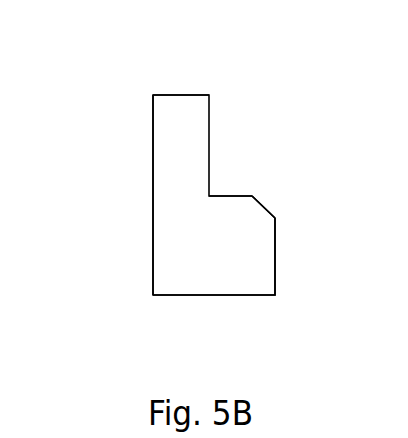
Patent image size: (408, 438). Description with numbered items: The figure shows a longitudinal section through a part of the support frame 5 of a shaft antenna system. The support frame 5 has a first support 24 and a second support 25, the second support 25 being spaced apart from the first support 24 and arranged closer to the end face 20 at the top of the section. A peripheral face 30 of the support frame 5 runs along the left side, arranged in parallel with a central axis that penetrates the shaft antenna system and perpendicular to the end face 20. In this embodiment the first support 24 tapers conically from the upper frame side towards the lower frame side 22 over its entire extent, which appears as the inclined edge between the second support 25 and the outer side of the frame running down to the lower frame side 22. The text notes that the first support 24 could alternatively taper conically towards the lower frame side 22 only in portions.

The support frame 5 is at (105, 118).
The end face 20 is at (181, 96).
The peripheral face 30 is at (153, 213).
The second support 25 is at (239, 196).
The first support 24 is at (266, 208).
The lower frame side 22 is at (298, 265).